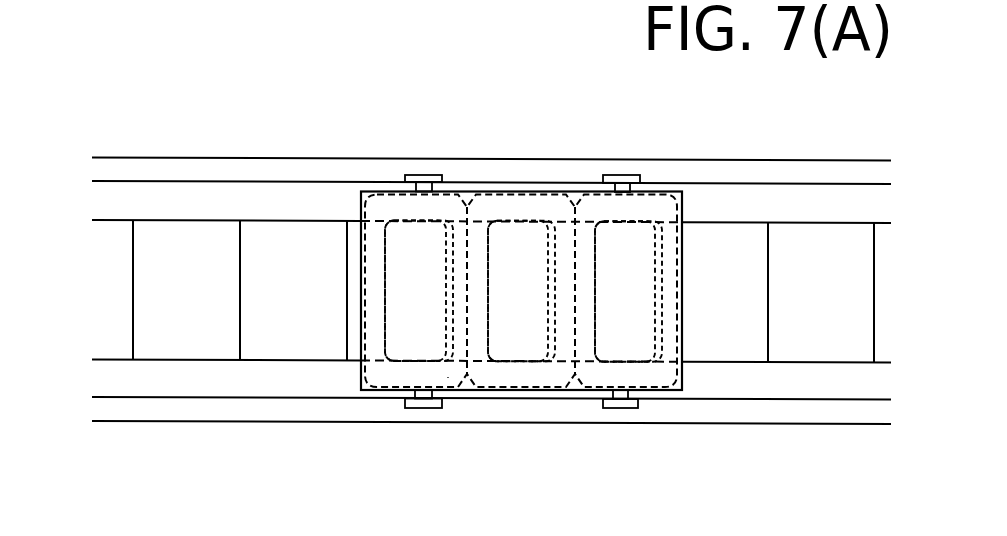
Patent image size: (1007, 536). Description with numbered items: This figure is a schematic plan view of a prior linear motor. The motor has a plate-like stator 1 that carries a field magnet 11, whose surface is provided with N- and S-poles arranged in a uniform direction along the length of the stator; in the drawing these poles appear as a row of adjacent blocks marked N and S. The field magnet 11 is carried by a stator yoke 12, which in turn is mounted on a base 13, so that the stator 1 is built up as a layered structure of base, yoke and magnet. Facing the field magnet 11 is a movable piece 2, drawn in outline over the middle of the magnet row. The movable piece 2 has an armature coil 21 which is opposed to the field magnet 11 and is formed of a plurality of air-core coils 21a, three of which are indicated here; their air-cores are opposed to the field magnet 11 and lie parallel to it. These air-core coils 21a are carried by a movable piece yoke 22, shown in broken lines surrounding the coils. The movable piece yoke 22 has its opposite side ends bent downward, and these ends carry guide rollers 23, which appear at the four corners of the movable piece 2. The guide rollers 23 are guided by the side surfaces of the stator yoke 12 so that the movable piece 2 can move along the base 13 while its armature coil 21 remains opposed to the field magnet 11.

The stator 1 is at (247, 158).
The field magnet 11 is at (300, 238).
The stator yoke 12 is at (202, 198).
The base 13 is at (138, 172).
The movable piece 2 is at (505, 160).
The armature coil 21 is at (529, 204).
The air-core coil 21a is at (448, 377).
The movable piece yoke 22 is at (470, 197).
The guide roller 23 is at (420, 175).